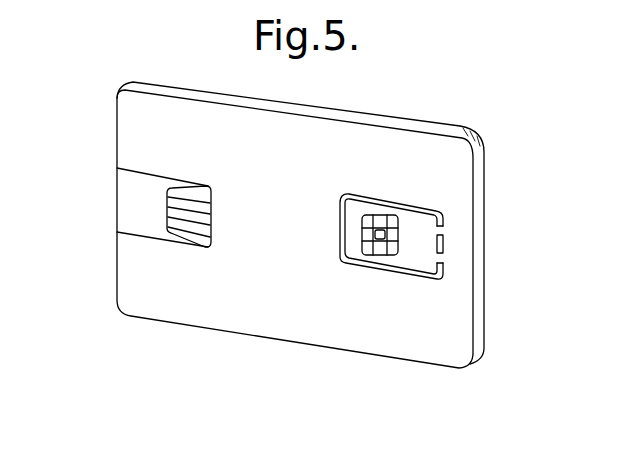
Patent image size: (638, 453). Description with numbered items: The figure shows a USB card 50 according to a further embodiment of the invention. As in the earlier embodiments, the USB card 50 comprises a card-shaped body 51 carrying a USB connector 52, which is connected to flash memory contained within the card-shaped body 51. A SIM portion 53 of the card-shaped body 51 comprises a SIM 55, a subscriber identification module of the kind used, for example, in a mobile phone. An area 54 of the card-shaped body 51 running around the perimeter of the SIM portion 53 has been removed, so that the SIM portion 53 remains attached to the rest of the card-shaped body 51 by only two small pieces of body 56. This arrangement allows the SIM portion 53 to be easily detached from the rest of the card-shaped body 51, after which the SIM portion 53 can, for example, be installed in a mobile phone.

The USB card 50 is at (510, 136).
The card-shaped body 51 is at (193, 118).
The USB connector 52 is at (130, 210).
The SIM portion 53 is at (413, 228).
The area 54 is at (410, 272).
The SIM 55 is at (363, 248).
The small pieces of body 56 is at (444, 232).